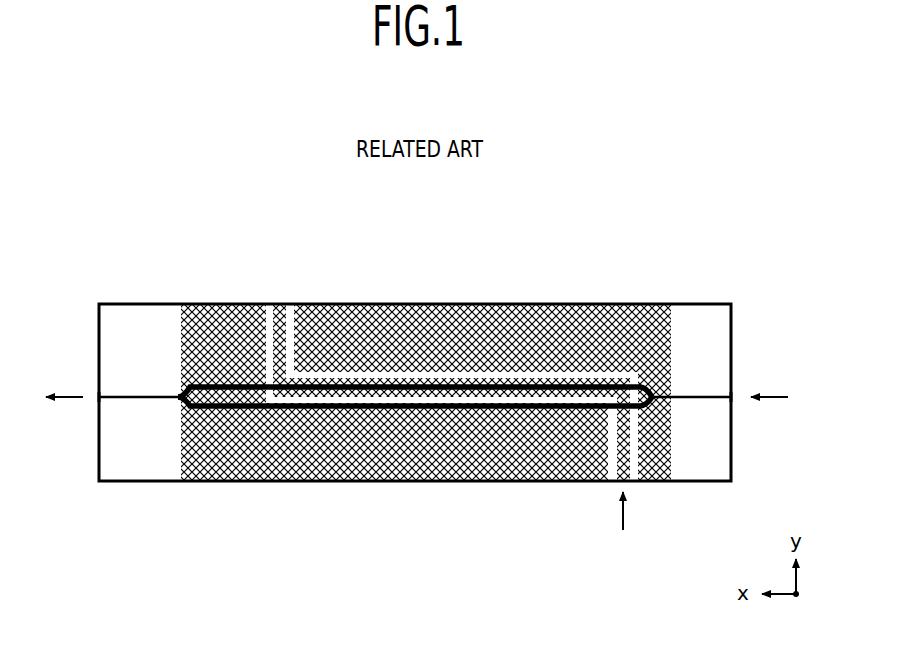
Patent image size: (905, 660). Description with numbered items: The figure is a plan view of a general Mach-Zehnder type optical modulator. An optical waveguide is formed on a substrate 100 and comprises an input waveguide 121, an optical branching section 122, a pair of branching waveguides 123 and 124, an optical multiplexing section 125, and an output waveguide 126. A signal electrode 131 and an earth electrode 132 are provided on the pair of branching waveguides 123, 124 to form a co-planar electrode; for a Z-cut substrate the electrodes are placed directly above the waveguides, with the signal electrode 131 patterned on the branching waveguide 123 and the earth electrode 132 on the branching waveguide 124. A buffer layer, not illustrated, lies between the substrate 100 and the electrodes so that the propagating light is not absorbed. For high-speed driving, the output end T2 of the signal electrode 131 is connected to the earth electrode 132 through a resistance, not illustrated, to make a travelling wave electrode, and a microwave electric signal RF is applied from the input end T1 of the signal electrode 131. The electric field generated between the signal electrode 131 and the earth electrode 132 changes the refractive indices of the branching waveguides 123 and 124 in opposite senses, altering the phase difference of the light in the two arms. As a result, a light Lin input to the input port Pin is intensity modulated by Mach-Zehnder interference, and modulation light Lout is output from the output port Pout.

The substrate 100 is at (714, 482).
The input waveguide 121 is at (697, 396).
The optical branching section 122 is at (653, 395).
The branching waveguide 123 is at (555, 384).
The branching waveguide 124 is at (490, 409).
The optical multiplexing section 125 is at (179, 396).
The output waveguide 126 is at (123, 397).
The signal electrode 131 is at (620, 443).
The earth electrode 132 is at (397, 328).
The input end T1 is at (632, 482).
The output end T2 is at (281, 304).
The microwave electric signal RF is at (624, 525).
The light Lin is at (769, 379).
The modulation light Lout is at (58, 382).
The input port Pin is at (731, 398).
The output port Pout is at (98, 398).